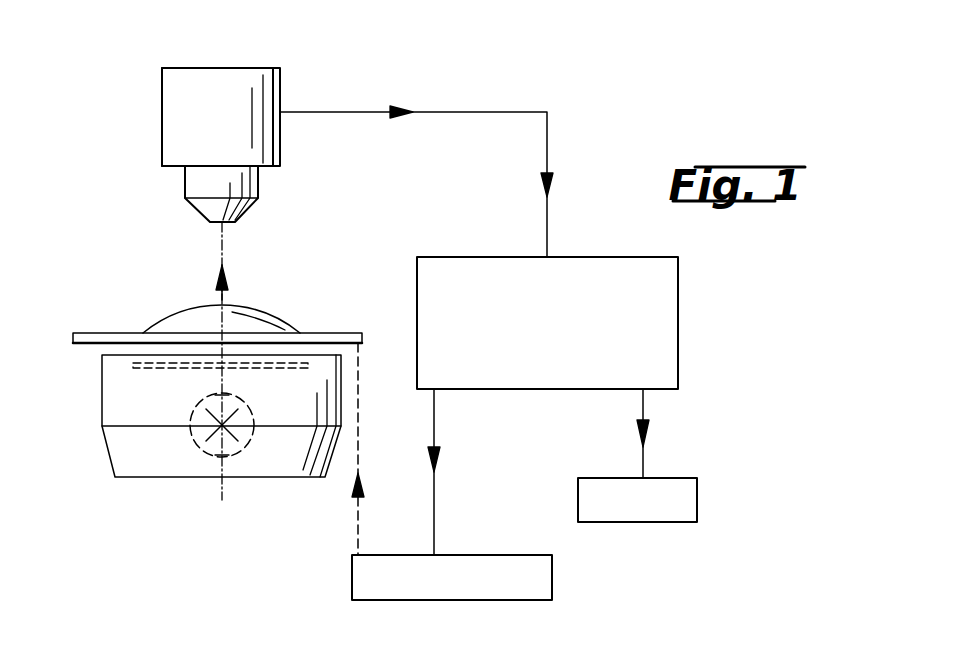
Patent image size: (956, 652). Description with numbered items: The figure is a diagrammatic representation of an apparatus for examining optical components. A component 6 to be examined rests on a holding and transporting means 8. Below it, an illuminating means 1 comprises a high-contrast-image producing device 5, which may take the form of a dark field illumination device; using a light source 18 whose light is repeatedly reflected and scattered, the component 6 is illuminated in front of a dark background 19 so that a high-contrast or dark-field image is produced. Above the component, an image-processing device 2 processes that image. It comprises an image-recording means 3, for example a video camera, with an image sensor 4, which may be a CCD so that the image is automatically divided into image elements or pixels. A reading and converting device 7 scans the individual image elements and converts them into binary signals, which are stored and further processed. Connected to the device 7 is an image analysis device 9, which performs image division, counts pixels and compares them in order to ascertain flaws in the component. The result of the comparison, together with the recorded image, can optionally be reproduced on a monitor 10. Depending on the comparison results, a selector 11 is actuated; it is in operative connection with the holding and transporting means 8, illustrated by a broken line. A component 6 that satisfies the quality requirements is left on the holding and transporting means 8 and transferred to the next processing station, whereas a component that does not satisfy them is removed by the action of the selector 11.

The illuminating means 1 is at (140, 502).
The image-processing device 2 is at (627, 148).
The image-recording means 3 is at (157, 122).
The image sensor 4 is at (205, 210).
The high-contrast-image producing device 5 is at (137, 462).
The component 6 is at (187, 318).
The reading and converting device 7 is at (227, 82).
The holding and transporting means 8 is at (323, 338).
The image analysis device 9 is at (665, 285).
The monitor 10 is at (682, 483).
The selector 11 is at (545, 578).
The light source 18 is at (222, 457).
The dark background 19 is at (167, 370).